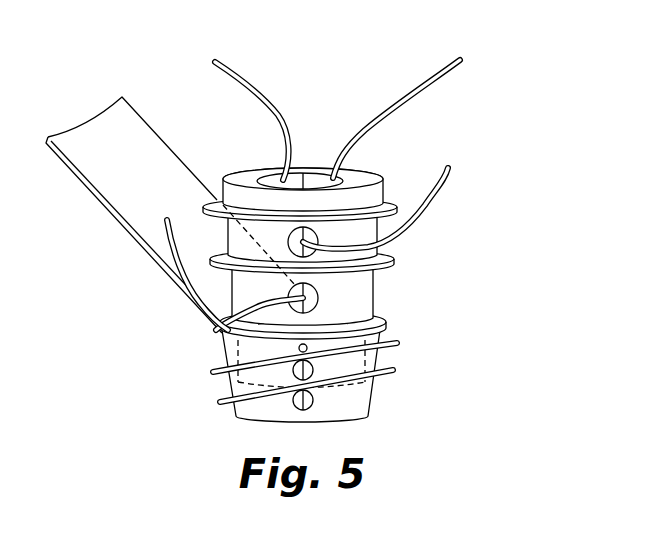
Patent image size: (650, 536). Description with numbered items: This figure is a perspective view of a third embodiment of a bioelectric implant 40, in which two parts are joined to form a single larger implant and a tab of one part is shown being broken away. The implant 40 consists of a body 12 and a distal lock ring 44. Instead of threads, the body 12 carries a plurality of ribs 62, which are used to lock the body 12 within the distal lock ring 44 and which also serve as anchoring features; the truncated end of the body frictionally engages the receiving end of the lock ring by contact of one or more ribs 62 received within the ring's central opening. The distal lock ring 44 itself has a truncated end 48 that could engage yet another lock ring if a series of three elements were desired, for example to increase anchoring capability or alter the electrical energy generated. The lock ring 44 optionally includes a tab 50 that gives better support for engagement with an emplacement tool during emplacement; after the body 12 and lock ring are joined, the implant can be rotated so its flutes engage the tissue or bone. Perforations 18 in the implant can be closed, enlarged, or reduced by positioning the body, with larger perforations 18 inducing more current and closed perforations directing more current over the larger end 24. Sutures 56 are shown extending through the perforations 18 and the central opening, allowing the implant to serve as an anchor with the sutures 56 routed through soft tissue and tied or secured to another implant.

The body 12 is at (372, 168).
The perforations 18 is at (300, 403).
The larger end 24 is at (212, 125).
The implant 40 is at (424, 132).
The distal lock ring 44 is at (400, 391).
The truncated end 48 is at (348, 420).
The tab 50 is at (127, 140).
The sutures 56 is at (250, 86).
The ribs 62 is at (220, 201).